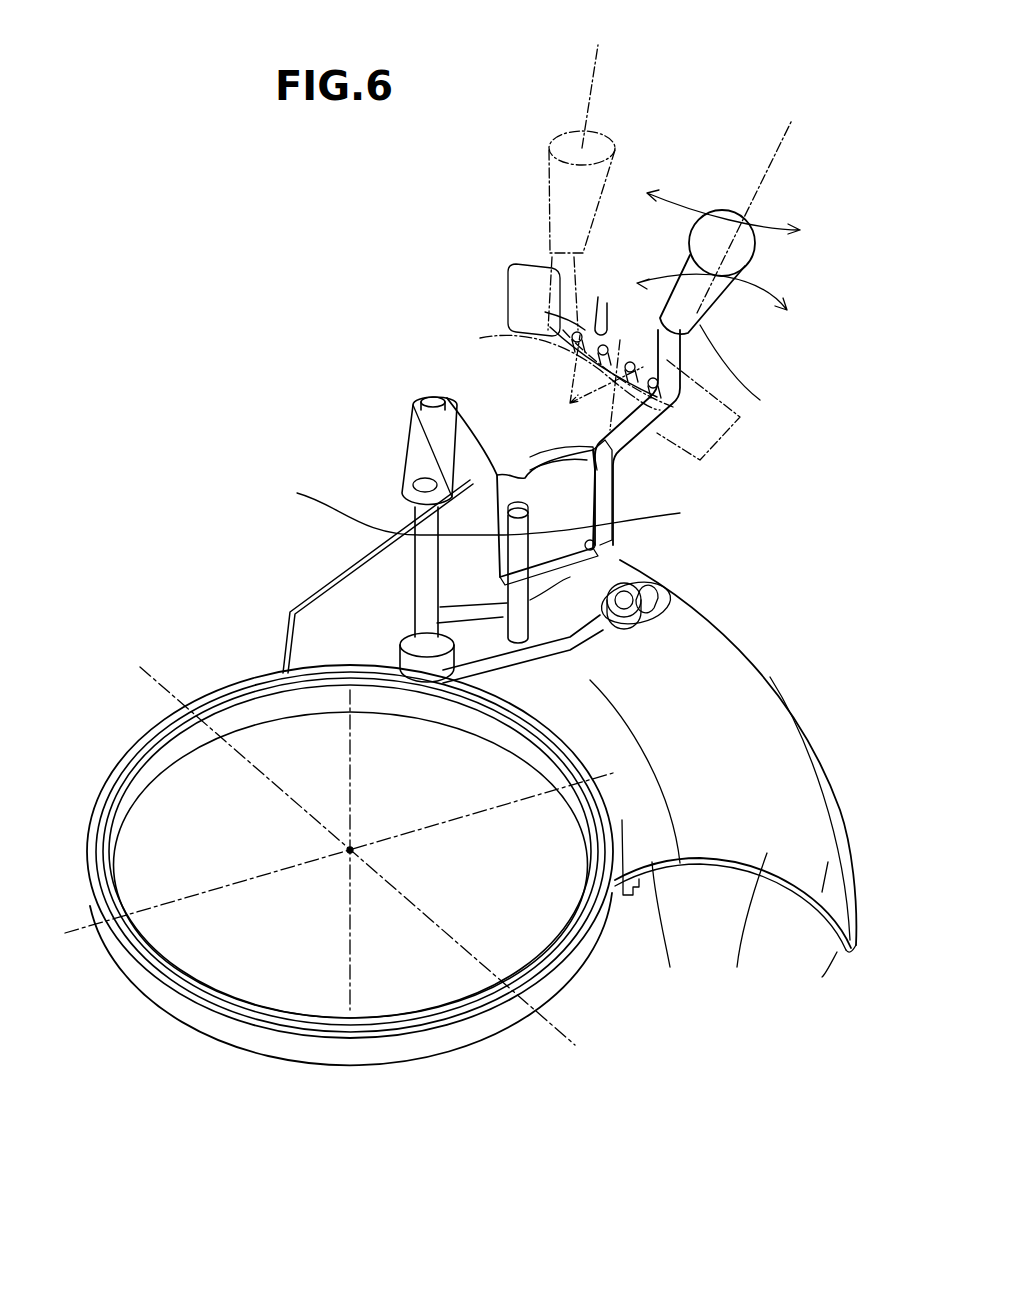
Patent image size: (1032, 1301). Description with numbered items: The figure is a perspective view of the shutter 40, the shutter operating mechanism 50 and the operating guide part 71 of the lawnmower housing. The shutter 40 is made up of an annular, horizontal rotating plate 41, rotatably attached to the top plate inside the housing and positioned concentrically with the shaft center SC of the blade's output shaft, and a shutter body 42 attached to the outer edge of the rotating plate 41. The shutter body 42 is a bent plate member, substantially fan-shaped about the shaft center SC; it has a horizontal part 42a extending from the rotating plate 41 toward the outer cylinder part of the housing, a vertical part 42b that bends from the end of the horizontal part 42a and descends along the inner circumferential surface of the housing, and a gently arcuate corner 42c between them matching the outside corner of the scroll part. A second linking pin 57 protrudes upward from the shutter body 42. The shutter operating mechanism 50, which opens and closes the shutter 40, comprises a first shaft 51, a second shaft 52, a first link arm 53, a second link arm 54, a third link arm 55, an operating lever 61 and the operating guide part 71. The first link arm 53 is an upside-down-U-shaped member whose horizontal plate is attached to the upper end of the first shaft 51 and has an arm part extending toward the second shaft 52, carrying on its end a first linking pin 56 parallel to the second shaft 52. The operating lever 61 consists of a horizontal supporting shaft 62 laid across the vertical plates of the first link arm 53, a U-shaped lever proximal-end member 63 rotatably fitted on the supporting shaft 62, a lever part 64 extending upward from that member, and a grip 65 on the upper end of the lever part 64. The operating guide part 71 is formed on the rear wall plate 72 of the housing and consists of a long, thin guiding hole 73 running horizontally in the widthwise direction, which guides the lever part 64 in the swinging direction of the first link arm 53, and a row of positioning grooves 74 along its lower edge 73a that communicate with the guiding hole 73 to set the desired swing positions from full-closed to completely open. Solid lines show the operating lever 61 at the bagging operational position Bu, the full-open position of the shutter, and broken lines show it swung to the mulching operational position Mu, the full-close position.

The shutter 40 is at (403, 1080).
The rotating plate 41 is at (455, 1035).
The shutter body 42 is at (569, 774).
The horizontal part 42a is at (737, 1035).
The vertical part 42b is at (738, 790).
The corner 42c is at (740, 937).
The shutter operating mechanism 50 is at (275, 242).
The first shaft 51 is at (403, 568).
The second shaft 52 is at (415, 577).
The first link arm 53 is at (508, 512).
The second link arm 54 is at (417, 458).
The third link arm 55 is at (600, 640).
The first linking pin 56 is at (425, 398).
The second linking pin 57 is at (633, 610).
The operating lever 61 is at (660, 315).
The supporting shaft 62 is at (627, 547).
The lever proximal-end member 63 is at (633, 517).
The lever part 64 is at (620, 433).
The grip 65 is at (713, 335).
The operating guide part 71 is at (525, 343).
The rear wall plate 72 is at (520, 275).
The guiding hole 73 is at (601, 300).
The lower edge 73a is at (550, 312).
The positioning grooves 74 is at (584, 385).
The shaft center SC is at (350, 850).
The mulching operational position Mu is at (598, 81).
The bagging operational position Bu is at (728, 201).